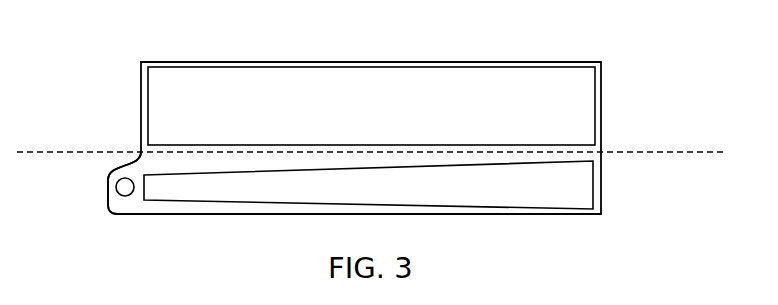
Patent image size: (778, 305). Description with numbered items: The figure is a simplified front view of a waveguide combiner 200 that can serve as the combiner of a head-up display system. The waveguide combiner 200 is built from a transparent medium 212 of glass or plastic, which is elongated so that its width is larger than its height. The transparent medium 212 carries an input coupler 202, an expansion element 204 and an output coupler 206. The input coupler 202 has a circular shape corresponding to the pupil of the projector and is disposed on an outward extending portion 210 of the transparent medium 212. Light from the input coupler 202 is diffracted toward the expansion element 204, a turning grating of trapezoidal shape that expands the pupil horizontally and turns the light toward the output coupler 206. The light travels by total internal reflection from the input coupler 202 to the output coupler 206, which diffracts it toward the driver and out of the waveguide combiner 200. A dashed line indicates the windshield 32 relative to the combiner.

The windshield 32 is at (82, 150).
The waveguide combiner 200 is at (590, 62).
The transparent medium 212 is at (510, 62).
The output coupler 206 is at (583, 100).
The expansion element 204 is at (587, 194).
The outward extending portion 210 is at (107, 187).
The input coupler 202 is at (123, 196).